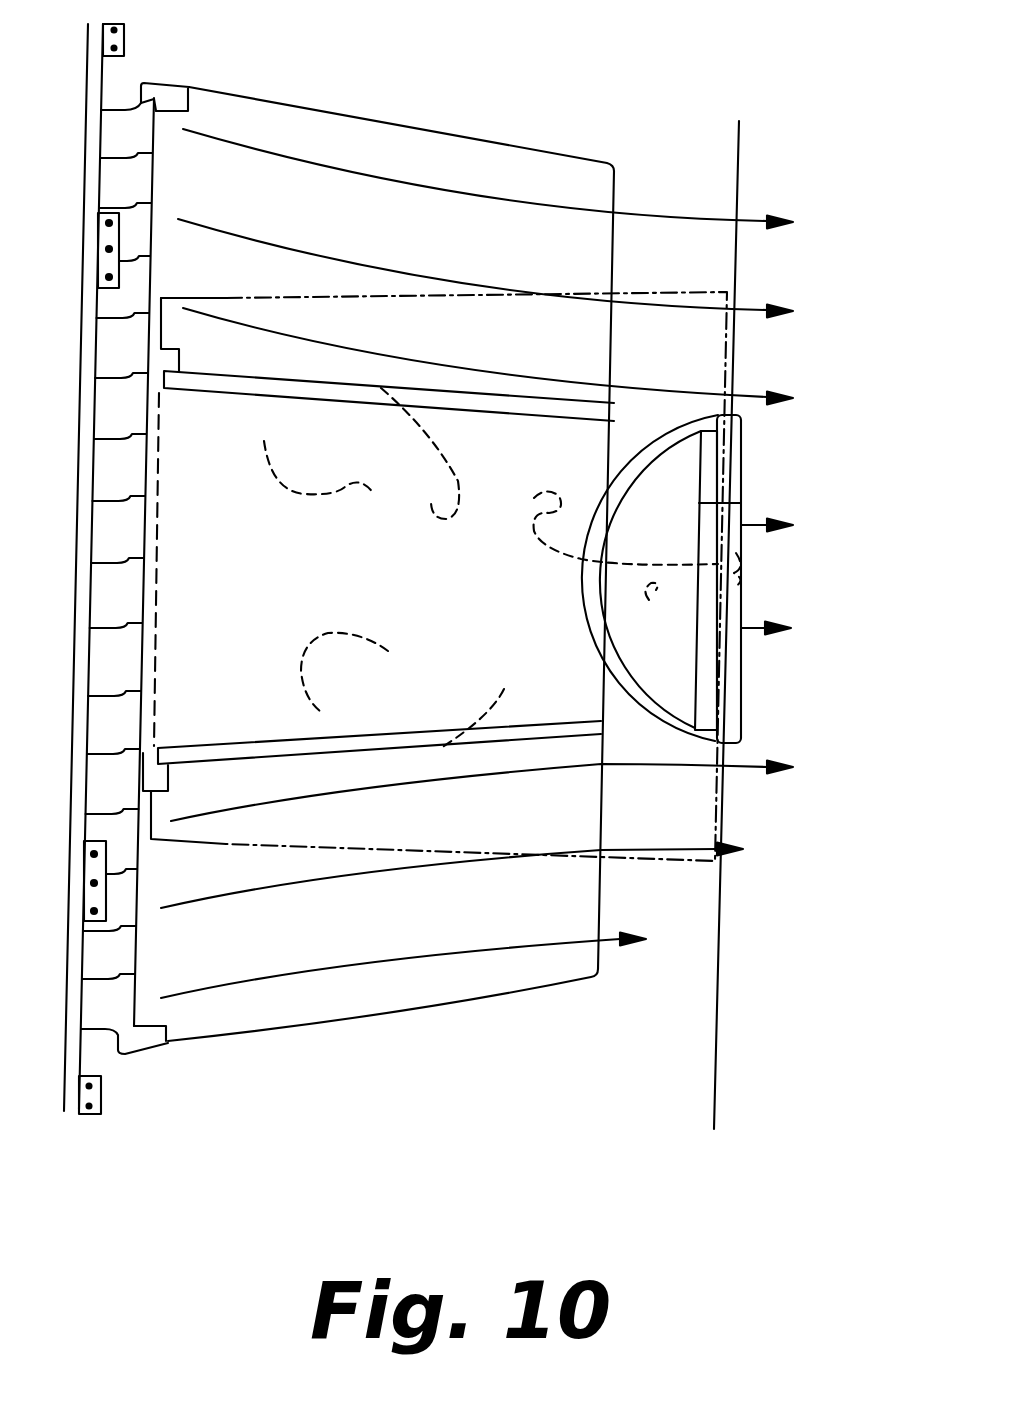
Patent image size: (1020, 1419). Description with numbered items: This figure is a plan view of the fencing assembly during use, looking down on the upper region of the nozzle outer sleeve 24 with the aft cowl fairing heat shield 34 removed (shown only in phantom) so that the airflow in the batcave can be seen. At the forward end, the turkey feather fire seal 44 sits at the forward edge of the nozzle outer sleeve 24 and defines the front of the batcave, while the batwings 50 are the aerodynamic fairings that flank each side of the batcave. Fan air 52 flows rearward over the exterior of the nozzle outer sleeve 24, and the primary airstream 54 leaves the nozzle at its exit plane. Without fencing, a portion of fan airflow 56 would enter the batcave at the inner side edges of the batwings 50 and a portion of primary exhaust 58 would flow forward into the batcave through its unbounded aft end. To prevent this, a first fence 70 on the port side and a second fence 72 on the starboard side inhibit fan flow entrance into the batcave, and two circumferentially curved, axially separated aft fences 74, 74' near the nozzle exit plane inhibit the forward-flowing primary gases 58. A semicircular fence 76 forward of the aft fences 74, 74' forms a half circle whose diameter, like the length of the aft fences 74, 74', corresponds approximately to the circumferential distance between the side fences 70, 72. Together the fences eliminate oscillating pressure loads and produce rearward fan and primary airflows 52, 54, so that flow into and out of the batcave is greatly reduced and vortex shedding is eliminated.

The nozzle outer sleeve 24 is at (300, 108).
The aft cowl fairing heat shield 34 is at (692, 290).
The turkey feather fire seal 44 is at (145, 134).
The batwings 50 is at (424, 135).
The fan air 52 is at (760, 217).
The primary airstream 54 is at (752, 630).
The portion of fan airflow entering the batcave 56 is at (362, 637).
The portion of primary exhaust entering the batcave 58 is at (548, 543).
The first fence 70 is at (192, 753).
The second fence 72 is at (238, 388).
The aft fence 74 is at (780, 579).
The aft fence 74' is at (769, 580).
The semicircular fence 76 is at (590, 632).